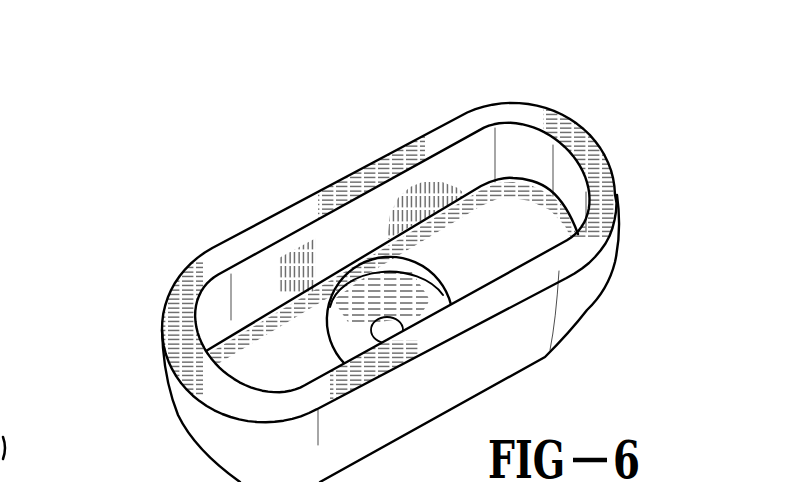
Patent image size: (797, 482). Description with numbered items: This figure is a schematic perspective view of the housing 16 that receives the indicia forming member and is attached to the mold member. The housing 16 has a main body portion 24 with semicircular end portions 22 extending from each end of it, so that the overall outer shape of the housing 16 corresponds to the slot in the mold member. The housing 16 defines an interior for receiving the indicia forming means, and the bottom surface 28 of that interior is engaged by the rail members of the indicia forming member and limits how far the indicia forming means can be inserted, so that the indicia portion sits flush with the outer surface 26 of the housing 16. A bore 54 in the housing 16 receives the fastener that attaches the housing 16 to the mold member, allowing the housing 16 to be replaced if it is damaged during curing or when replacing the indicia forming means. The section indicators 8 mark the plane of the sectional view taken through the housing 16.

The section line 8- 8 is at (173, 378).
The housing 16 is at (140, 203).
The semicircular end portion 22 is at (220, 418).
The main body portion 24 is at (308, 188).
The outer surface 26 is at (232, 243).
The bottom surface 28 is at (523, 243).
The bore 54 is at (390, 322).